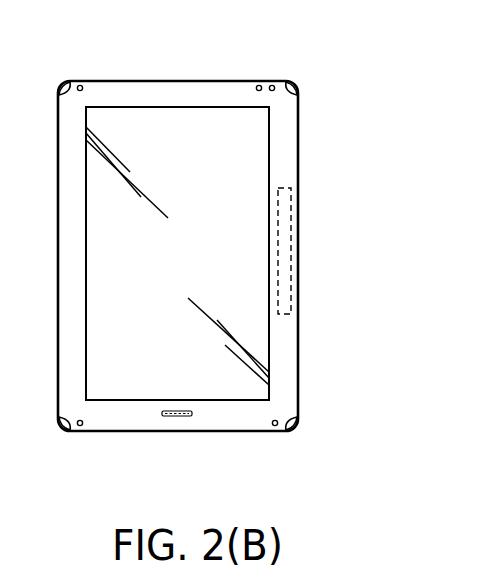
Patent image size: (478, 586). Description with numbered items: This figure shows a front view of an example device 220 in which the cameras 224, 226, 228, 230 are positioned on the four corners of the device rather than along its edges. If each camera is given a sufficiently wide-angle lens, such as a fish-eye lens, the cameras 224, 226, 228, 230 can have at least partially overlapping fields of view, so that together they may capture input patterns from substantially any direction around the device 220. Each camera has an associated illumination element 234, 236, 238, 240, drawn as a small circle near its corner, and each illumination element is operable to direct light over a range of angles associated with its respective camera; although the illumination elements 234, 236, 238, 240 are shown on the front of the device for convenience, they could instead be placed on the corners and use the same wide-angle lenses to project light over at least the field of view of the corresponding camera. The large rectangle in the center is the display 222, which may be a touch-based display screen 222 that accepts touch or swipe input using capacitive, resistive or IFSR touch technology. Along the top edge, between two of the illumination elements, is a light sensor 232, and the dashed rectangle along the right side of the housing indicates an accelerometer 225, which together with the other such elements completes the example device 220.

The device 220 is at (365, 86).
The display screen 222 is at (86, 112).
The camera 224 is at (63, 84).
The accelerometer 225 is at (290, 236).
The camera 226 is at (286, 83).
The camera 228 is at (63, 431).
The camera 230 is at (293, 432).
The light sensor 232 is at (258, 86).
The illumination element 234 is at (82, 86).
The illumination element 236 is at (272, 86).
The illumination element 238 is at (82, 431).
The illumination element 240 is at (273, 431).